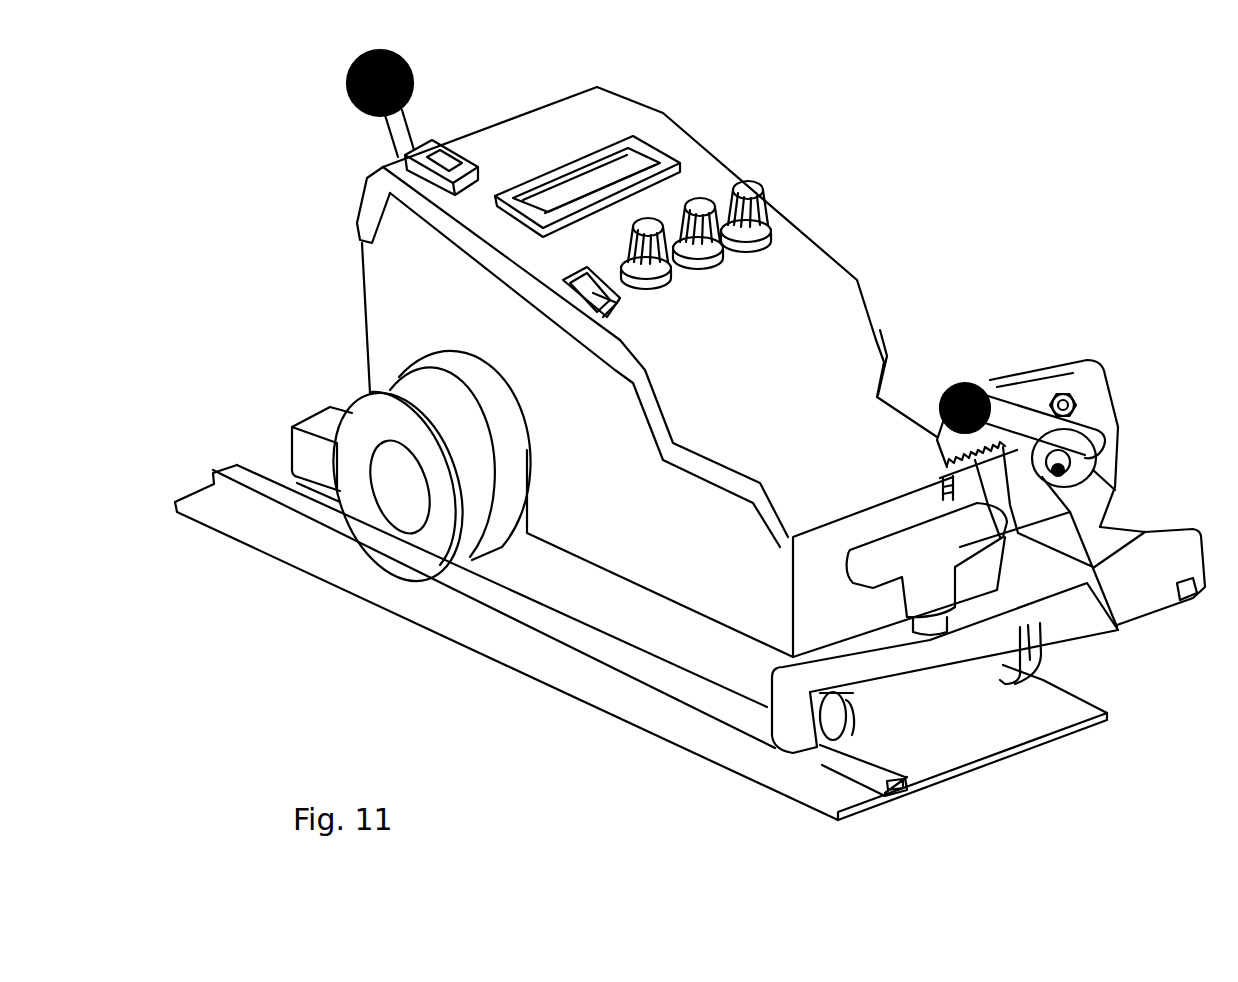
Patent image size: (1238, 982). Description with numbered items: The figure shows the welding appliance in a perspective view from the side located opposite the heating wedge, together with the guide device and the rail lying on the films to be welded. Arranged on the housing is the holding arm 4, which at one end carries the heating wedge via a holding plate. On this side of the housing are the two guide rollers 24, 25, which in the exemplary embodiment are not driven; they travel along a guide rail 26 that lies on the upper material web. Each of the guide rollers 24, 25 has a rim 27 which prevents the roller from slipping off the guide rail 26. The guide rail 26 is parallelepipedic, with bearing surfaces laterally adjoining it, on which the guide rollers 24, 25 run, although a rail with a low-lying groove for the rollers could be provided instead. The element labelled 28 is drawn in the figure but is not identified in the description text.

The holding arm 4 is at (1062, 365).
The guide roller 24 is at (368, 395).
The guide roller 25 is at (903, 787).
The guide rail 26 is at (540, 622).
The rim 27 is at (345, 418).
The guide rail 28 is at (670, 725).